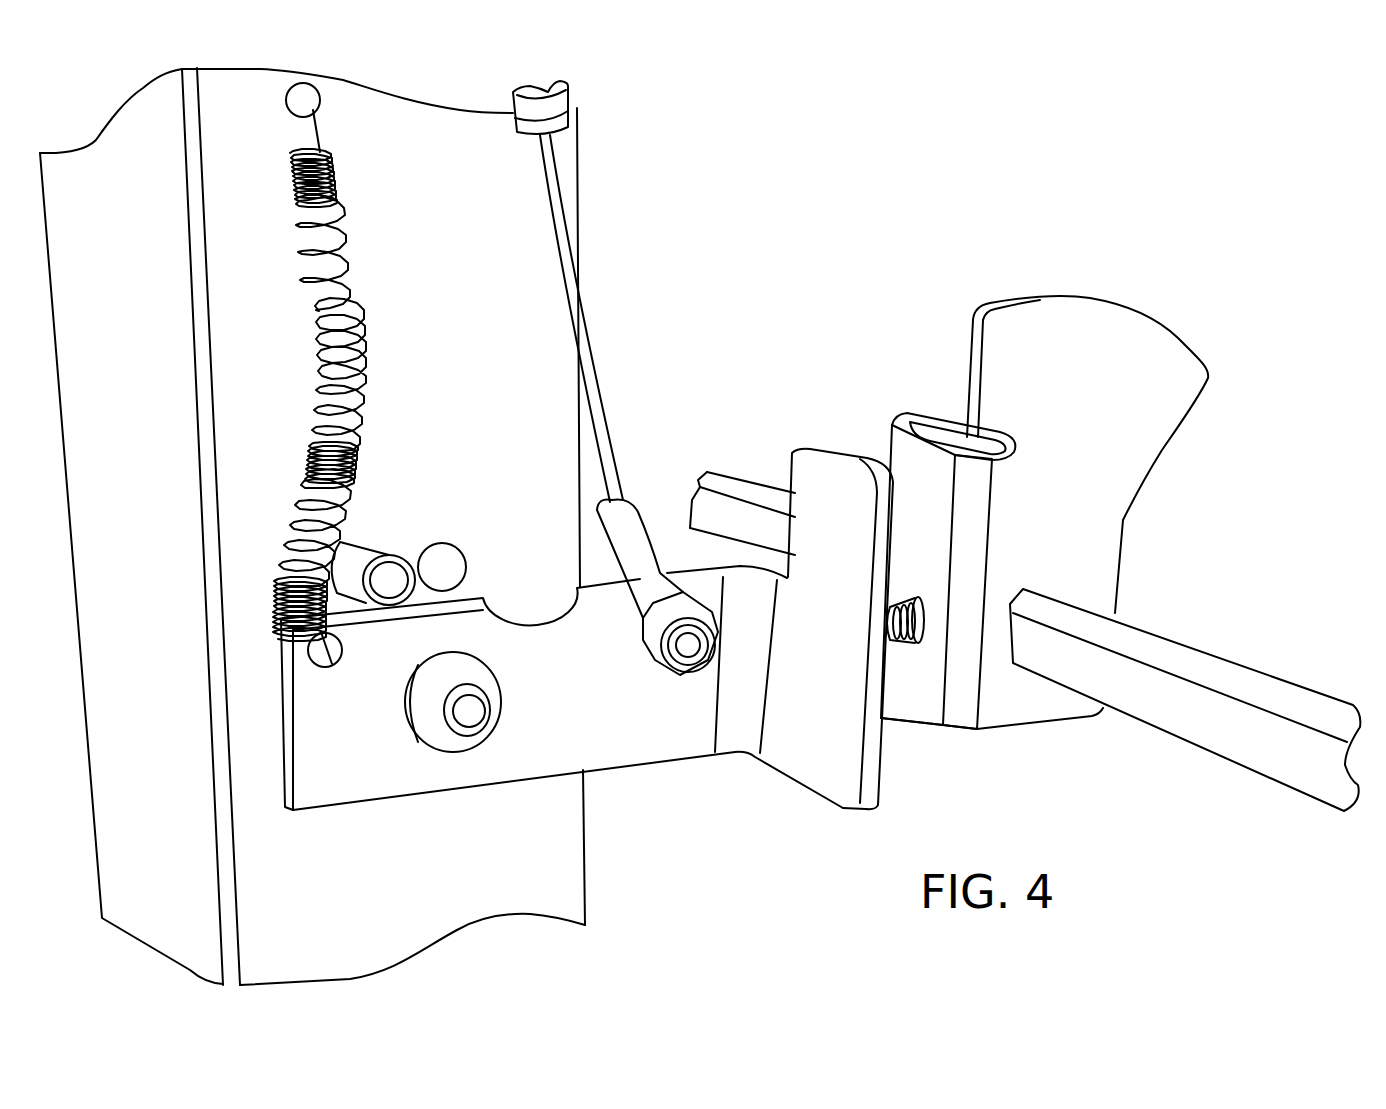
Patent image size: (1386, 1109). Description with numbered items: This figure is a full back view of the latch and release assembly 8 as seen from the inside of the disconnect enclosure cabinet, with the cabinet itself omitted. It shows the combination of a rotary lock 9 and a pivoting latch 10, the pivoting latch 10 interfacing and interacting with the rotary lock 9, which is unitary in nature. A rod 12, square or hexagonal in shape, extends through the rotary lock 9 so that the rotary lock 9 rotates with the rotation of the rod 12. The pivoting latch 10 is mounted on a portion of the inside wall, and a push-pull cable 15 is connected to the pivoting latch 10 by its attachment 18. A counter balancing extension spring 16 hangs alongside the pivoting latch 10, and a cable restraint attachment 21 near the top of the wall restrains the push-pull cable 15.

The latch and release assembly 8 is at (862, 410).
The rotary lock 9 is at (1138, 348).
The pivoting latch 10 is at (825, 748).
The rod 12 is at (757, 485).
The push-pull cable 15 is at (553, 230).
The counter balancing extension spring 16 is at (357, 303).
The attachment 18 is at (667, 677).
The cable restraint attachment 21 is at (553, 105).